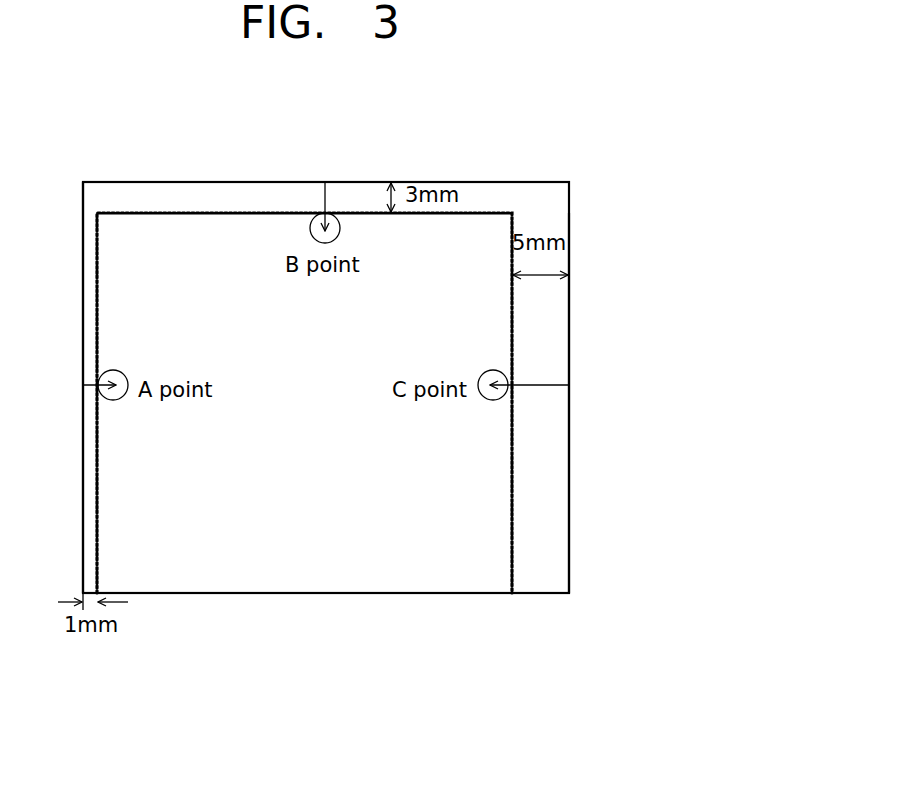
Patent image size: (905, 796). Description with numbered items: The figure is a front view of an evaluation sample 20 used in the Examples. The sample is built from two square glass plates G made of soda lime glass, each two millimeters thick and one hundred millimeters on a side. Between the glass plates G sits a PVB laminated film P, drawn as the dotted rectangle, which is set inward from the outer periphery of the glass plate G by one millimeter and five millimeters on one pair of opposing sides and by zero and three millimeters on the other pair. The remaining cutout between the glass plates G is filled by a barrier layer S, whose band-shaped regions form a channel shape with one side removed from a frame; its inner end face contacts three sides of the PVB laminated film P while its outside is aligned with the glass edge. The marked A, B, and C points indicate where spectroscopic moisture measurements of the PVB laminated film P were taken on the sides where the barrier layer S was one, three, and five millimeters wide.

The evaluation sample 20 is at (478, 154).
The barrier layer S is at (85, 312).
The PVB laminated film P is at (289, 563).
The glass plate G is at (547, 477).